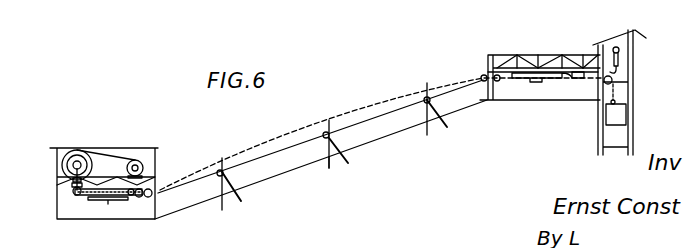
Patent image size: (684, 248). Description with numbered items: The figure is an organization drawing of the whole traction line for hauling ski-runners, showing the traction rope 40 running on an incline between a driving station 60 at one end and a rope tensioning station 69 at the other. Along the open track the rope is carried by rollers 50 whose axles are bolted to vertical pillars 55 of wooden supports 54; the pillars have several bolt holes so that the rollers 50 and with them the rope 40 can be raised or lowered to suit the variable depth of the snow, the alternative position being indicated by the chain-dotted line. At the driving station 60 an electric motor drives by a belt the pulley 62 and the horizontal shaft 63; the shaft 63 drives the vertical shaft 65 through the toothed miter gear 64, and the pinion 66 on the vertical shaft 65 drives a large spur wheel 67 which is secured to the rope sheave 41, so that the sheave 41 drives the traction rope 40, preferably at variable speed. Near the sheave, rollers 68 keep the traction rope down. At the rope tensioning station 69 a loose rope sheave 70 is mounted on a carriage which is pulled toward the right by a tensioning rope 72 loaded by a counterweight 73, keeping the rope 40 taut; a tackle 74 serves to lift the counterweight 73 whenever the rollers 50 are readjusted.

The traction rope 40 is at (284, 149).
The rope sheave 41 is at (94, 198).
The rollers 50 is at (326, 131).
The wooden supports 54 is at (350, 161).
The vertical pillars 55 is at (333, 166).
The driving station 60 is at (104, 170).
The pulley 62 is at (77, 151).
The horizontal shaft 63 is at (64, 160).
The toothed miter gear 64 is at (72, 179).
The vertical shaft 65 is at (70, 184).
The pinion 66 is at (75, 192).
The large spur wheel 67 is at (132, 197).
The rollers for keeping down the traction rope 68 is at (152, 197).
The rope tensioning station 69 is at (540, 61).
The loose rope sheave 70 is at (518, 79).
The tensioning rope 72 is at (580, 76).
The counterweight 73 is at (627, 113).
The tackle 74 is at (620, 60).